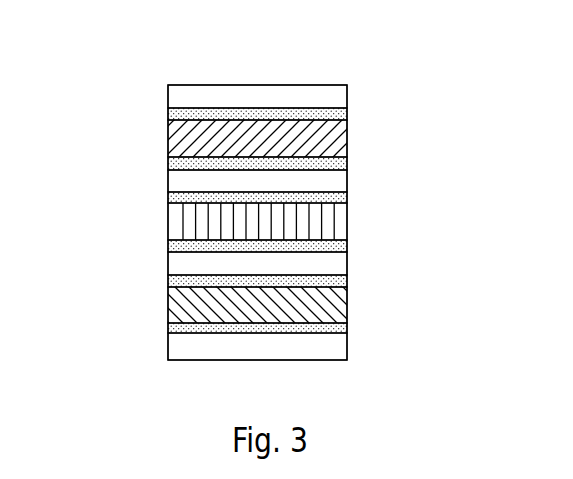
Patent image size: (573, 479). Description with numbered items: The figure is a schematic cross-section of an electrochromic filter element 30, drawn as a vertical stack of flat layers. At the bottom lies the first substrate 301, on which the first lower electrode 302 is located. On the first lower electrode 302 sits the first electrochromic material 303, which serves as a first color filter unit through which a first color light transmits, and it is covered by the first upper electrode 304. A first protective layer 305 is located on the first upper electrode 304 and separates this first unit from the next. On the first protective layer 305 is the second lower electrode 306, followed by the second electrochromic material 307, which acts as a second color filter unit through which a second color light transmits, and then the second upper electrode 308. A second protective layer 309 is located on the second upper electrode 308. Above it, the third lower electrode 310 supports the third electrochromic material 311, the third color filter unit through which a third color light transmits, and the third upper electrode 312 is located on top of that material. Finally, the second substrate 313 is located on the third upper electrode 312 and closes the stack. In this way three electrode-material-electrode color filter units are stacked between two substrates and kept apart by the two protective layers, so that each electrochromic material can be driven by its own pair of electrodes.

The electrochromic filter element 30 is at (88, 59).
The first substrate 301 is at (347, 348).
The first lower electrode 302 is at (168, 328).
The first electrochromic material 303 is at (347, 305).
The first upper electrode 304 is at (168, 280).
The first protective layer 305 is at (347, 263).
The second lower electrode 306 is at (168, 247).
The second electrochromic material 307 is at (347, 223).
The second upper electrode 308 is at (168, 198).
The second protective layer 309 is at (347, 182).
The third lower electrode 310 is at (168, 163).
The third electrochromic material 311 is at (347, 137).
The third upper electrode 312 is at (168, 115).
The second substrate 313 is at (347, 97).